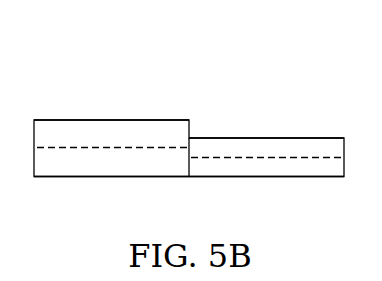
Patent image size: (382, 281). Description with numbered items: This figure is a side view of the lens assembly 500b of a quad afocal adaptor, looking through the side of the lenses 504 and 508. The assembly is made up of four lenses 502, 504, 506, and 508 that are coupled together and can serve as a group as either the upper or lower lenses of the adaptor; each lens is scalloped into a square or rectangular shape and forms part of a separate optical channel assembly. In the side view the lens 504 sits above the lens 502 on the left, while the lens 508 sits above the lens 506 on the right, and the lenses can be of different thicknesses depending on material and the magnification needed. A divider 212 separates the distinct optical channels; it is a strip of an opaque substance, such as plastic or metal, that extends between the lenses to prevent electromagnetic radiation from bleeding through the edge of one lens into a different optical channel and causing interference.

The lens assembly 500b is at (246, 61).
The lens 504 is at (110, 128).
The lens 502 is at (110, 178).
The divider 212 is at (189, 150).
The lens 508 is at (267, 147).
The lens 506 is at (267, 168).